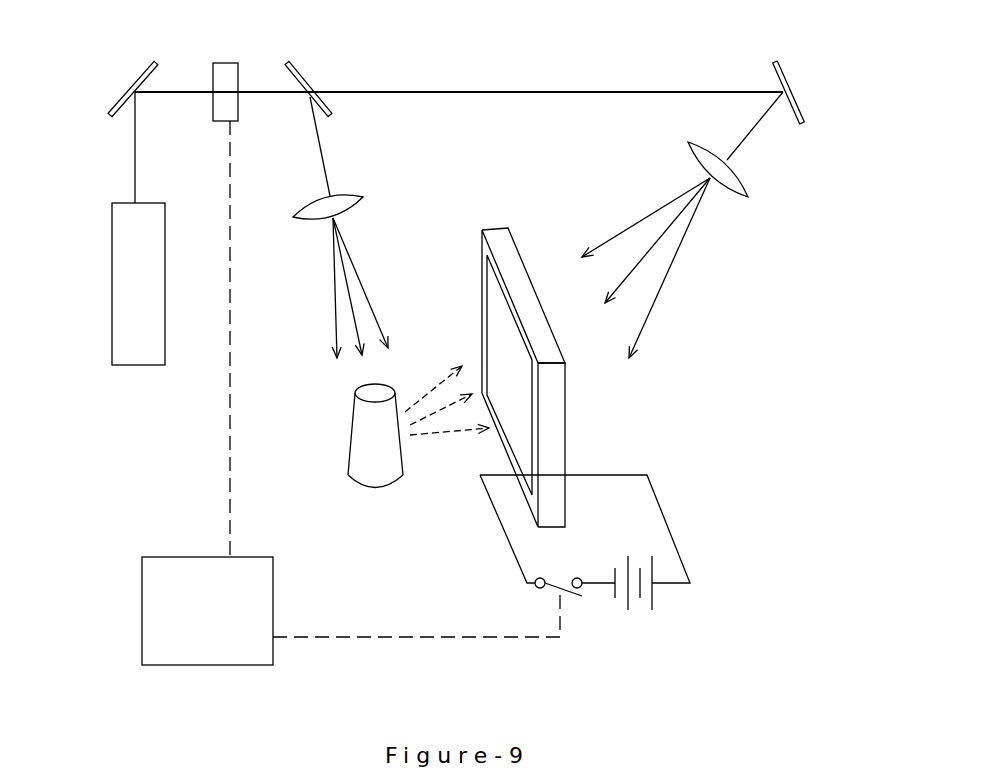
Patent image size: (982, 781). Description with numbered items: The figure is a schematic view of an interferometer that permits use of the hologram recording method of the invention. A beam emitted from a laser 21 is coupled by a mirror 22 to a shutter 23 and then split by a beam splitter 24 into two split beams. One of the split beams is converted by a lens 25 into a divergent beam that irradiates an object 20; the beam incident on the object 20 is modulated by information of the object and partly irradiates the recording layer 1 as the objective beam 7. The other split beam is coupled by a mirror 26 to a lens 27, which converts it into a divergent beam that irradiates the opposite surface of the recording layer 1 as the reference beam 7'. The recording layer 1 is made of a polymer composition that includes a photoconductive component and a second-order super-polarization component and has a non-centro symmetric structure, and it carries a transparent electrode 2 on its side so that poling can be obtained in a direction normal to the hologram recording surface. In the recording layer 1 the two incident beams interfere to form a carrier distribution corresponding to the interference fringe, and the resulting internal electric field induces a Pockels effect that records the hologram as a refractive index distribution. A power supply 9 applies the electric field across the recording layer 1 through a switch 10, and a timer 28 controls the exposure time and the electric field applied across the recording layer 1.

The recording layer 1 is at (500, 228).
The transparent electrode 2 is at (492, 288).
The objective beam 7 is at (447, 370).
The reference beam 7' is at (634, 254).
The power supply 9 is at (643, 621).
The switch 10 is at (572, 600).
The object 20 is at (370, 480).
The laser 21 is at (133, 365).
The mirror 22 is at (152, 66).
The shutter 23 is at (225, 63).
The beam splitter 24 is at (300, 72).
The lens 25 is at (357, 195).
The mirror 26 is at (776, 62).
The lens 27 is at (750, 192).
The timer 28 is at (242, 665).